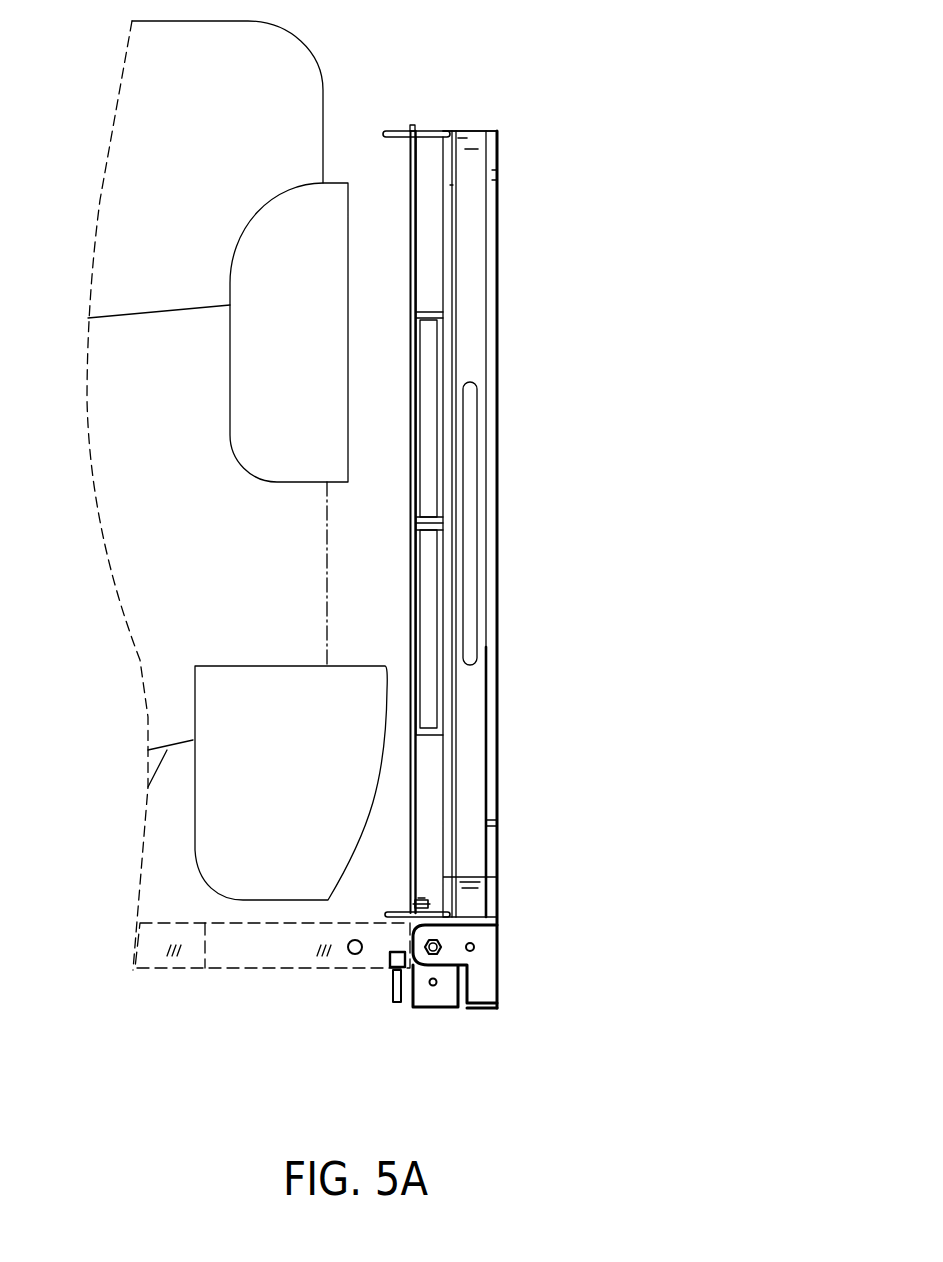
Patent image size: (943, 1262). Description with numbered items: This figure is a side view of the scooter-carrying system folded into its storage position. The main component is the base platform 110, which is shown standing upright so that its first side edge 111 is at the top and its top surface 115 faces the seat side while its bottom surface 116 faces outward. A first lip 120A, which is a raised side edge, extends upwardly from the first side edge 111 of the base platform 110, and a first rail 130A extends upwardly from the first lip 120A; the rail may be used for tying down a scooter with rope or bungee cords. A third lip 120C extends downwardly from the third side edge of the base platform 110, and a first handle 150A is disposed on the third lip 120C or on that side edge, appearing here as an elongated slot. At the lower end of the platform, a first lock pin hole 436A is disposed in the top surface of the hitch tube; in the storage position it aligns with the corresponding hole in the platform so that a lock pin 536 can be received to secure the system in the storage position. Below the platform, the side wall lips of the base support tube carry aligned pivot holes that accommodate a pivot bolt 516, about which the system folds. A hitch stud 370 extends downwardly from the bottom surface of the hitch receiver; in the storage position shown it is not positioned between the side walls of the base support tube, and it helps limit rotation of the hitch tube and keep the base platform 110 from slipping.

The base platform 110 is at (492, 290).
The first side edge 111 is at (467, 130).
The top surface 115 is at (443, 277).
The bottom surface 116 is at (497, 607).
The first lip 120A is at (432, 130).
The third lip 120C is at (473, 200).
The first rail 130A is at (392, 130).
The first handle 150A is at (468, 510).
The hitch stud 370 is at (392, 987).
The first lock pin hole 436A is at (423, 910).
The pivot bolt 516 is at (437, 950).
The lock pin 536 is at (413, 908).